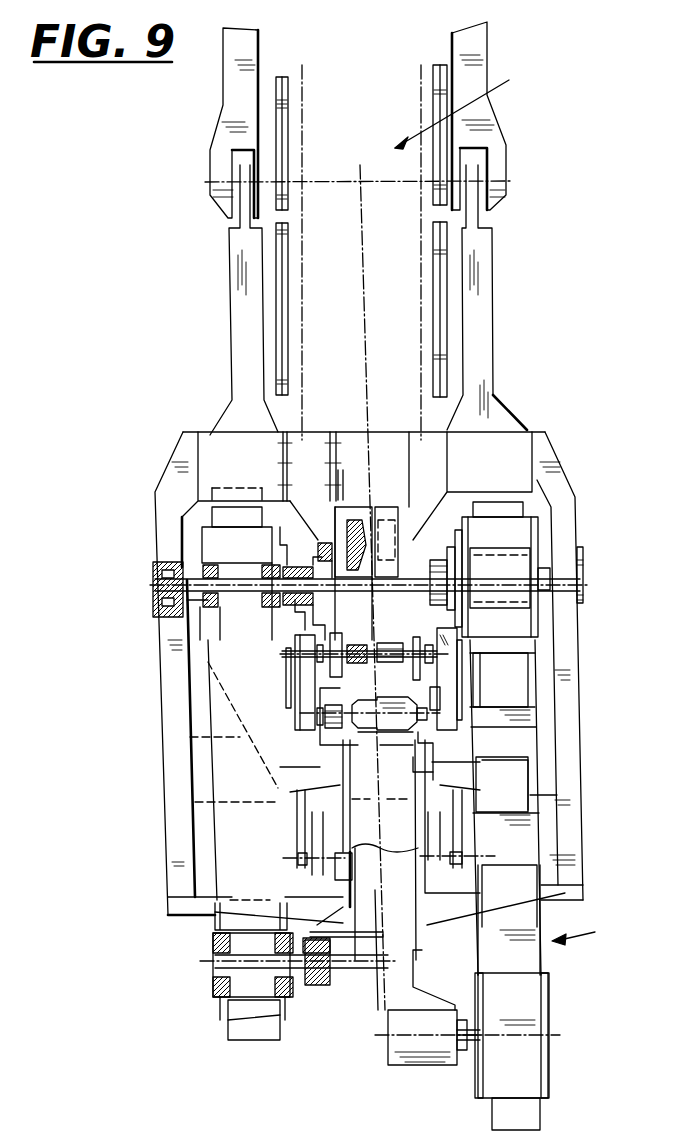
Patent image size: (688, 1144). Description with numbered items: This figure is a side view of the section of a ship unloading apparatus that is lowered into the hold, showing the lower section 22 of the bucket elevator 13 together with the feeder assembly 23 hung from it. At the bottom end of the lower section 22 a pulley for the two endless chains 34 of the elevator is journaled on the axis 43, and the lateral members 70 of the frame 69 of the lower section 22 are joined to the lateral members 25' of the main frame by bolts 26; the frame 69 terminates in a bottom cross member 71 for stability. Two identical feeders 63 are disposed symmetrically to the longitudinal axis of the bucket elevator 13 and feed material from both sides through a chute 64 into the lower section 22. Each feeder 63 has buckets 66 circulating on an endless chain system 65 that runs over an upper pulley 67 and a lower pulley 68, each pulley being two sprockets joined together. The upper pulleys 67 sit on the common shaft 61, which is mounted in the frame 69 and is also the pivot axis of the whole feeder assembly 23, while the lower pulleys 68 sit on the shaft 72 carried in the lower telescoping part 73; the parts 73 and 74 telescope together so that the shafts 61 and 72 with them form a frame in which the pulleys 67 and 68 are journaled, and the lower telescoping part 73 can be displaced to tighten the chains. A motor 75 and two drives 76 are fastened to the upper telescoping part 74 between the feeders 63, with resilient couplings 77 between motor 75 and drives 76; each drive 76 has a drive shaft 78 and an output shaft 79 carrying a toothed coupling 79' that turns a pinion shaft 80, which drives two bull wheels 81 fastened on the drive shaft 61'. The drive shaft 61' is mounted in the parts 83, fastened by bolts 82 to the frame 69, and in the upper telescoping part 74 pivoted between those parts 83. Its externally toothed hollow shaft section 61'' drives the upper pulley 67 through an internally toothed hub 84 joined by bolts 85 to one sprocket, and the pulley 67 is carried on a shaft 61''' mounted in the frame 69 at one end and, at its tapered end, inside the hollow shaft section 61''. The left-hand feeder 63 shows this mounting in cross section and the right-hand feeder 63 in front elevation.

The bucket elevator 13 is at (467, 104).
The lower section 22 is at (415, 415).
The feeder assembly 23 is at (588, 935).
The lateral members of the main frame 25' is at (366, 120).
The bolts 26 is at (510, 180).
The endless chains 34 is at (297, 830).
The axis 43 is at (412, 770).
The shaft 61 is at (383, 578).
The drive shaft 61' is at (317, 558).
The hollow shaft section 61'' is at (271, 615).
The shaft 61''' is at (236, 591).
The feeders 63 is at (228, 764).
The chute 64 is at (228, 745).
The endless chain system 65 is at (208, 700).
The buckets 66 is at (535, 862).
The upper pulley 67 is at (182, 547).
The lower pulley 68 is at (212, 993).
The frame 69 is at (552, 448).
The lateral members 70 is at (240, 265).
The bottom cross member 71 is at (445, 905).
The shaft 72 is at (212, 965).
The lower telescoping part 73 is at (410, 950).
The upper telescoping part 74 is at (345, 790).
The motor 75 is at (386, 732).
The drives 76 is at (305, 698).
The resilient couplings 77 is at (417, 705).
The drive shaft 78 is at (300, 716).
The output shaft 79 is at (276, 682).
The toothed coupling 79' is at (267, 674).
The pinion shaft 80 is at (368, 673).
The bull wheels 81 is at (350, 520).
The bolts 82 is at (335, 450).
The parts 83 is at (438, 471).
The hub 84 is at (288, 543).
The bolts 85 is at (265, 544).